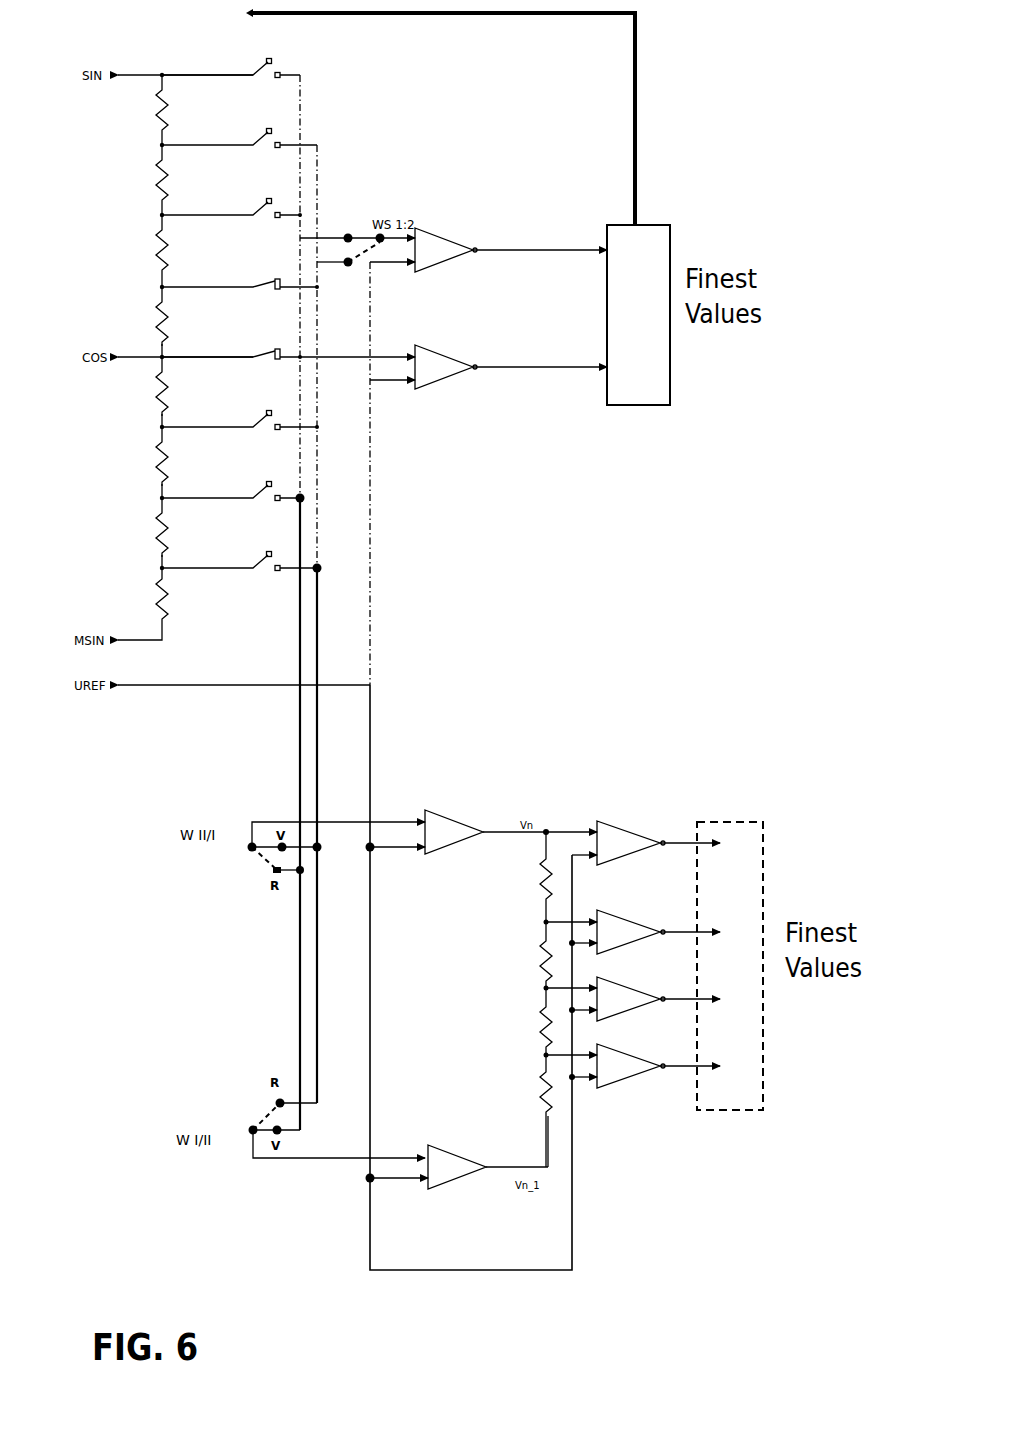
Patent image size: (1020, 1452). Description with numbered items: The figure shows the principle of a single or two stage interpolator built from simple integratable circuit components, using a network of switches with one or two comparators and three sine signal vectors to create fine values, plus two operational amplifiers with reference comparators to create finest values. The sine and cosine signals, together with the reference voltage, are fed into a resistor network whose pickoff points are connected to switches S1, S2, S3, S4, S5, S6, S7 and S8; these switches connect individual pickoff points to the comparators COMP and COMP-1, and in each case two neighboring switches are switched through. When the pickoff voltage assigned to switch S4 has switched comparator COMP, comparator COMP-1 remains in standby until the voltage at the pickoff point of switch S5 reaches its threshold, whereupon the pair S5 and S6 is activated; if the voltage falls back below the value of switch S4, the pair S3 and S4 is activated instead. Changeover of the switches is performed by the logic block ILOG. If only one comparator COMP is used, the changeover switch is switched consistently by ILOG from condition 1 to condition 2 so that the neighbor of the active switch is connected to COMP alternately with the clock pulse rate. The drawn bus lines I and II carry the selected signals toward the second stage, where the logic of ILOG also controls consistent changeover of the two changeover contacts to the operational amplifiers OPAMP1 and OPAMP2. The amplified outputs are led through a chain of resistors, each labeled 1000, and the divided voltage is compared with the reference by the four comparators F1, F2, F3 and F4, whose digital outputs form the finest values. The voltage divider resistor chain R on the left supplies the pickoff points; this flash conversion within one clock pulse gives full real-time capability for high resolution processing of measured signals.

The switch condition 1 is at (357, 230).
The switch condition 2 is at (348, 269).
The resistor 1000 ohm 1000 is at (560, 999).
The switch S1 is at (239, 556).
The switch S2 is at (231, 486).
The switch S3 is at (239, 415).
The switch S4 is at (288, 344).
The switch S5 is at (239, 274).
The switch S6 is at (231, 203).
The switch S7 is at (239, 133).
The switch S8 is at (231, 63).
The changeover contact position I is at (298, 585).
The changeover contact position II is at (319, 603).
The comparator COMP is at (511, 254).
The comparator COMP-1 is at (511, 377).
The logic block ILOG is at (638, 315).
The operational amplifier OPAMP1 is at (488, 1165).
The operational amplifier OPAMP2 is at (485, 842).
The comparator F1 is at (672, 1094).
The comparator F2 is at (672, 1004).
The comparator F3 is at (672, 937).
The comparator F4 is at (672, 832).
The resistor divider chain R is at (162, 352).